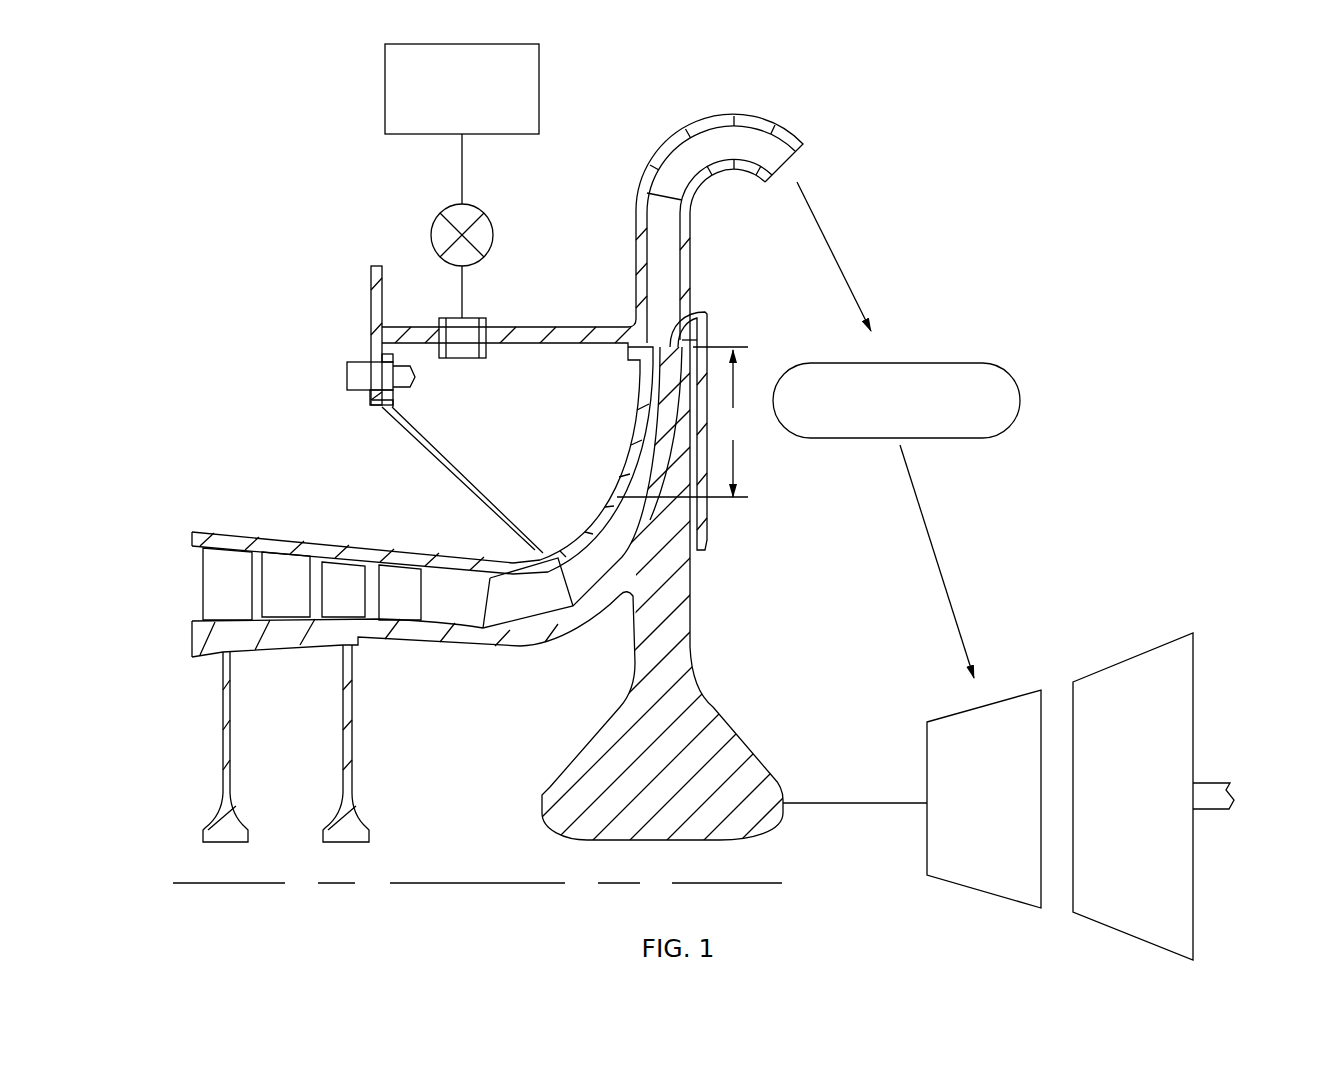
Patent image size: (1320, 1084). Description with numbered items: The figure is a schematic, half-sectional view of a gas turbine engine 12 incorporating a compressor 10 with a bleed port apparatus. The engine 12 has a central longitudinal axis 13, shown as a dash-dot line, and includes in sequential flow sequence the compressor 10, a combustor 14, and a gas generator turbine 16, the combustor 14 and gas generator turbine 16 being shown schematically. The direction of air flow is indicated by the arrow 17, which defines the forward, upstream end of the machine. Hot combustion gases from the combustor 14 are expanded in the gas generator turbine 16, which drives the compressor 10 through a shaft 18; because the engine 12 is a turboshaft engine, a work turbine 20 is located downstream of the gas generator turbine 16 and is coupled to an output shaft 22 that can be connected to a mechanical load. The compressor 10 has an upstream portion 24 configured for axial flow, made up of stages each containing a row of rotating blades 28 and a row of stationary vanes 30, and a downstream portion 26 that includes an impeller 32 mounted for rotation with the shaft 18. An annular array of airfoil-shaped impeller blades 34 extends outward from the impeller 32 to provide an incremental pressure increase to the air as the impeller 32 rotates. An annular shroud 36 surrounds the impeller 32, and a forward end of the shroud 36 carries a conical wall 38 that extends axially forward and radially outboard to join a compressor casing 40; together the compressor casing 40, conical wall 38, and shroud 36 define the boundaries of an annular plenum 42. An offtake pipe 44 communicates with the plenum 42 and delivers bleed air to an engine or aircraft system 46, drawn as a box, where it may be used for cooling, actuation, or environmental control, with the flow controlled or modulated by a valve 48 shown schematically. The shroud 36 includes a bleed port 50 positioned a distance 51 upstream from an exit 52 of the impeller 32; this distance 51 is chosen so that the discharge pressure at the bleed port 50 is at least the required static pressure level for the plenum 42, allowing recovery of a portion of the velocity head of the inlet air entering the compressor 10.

The compressor 10 is at (296, 410).
The gas turbine engine 12 is at (895, 146).
The central longitudinal axis 13 is at (236, 885).
The combustor 14 is at (896, 430).
The gas generator turbine 16 is at (984, 799).
The arrow 17 is at (224, 615).
The shaft 18 is at (822, 802).
The work turbine 20 is at (1133, 796).
The output shaft 22 is at (1215, 783).
The upstream portion 24 is at (285, 525).
The downstream portion 26 is at (568, 654).
The blades 28 is at (284, 584).
The vanes 30 is at (341, 586).
The impeller 32 is at (670, 596).
The impeller blades 34 is at (437, 505).
The shroud 36 is at (646, 398).
The conical wall 38 is at (440, 466).
The compressor casing 40 is at (575, 327).
The plenum 42 is at (443, 339).
The offtake pipe 44 is at (487, 320).
The system 46 is at (462, 124).
The valve 48 is at (493, 227).
The bleed port 50 is at (616, 492).
The distance 51 is at (683, 422).
The exit 52 is at (671, 346).